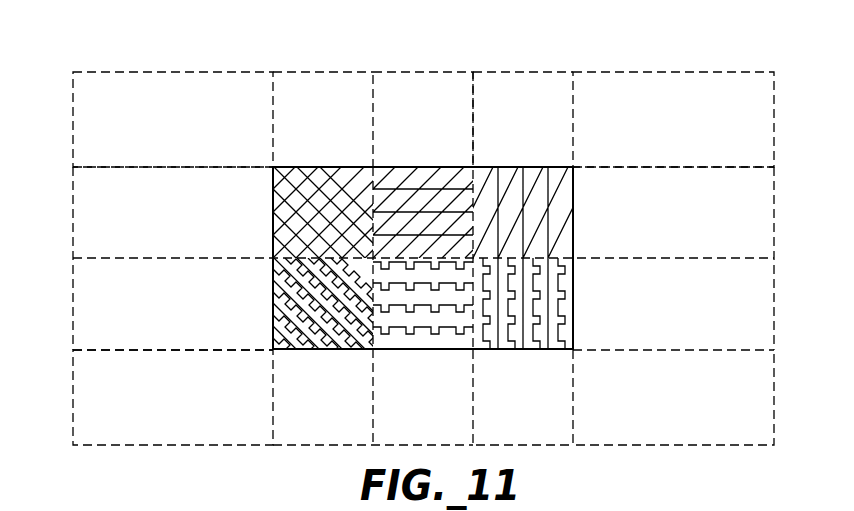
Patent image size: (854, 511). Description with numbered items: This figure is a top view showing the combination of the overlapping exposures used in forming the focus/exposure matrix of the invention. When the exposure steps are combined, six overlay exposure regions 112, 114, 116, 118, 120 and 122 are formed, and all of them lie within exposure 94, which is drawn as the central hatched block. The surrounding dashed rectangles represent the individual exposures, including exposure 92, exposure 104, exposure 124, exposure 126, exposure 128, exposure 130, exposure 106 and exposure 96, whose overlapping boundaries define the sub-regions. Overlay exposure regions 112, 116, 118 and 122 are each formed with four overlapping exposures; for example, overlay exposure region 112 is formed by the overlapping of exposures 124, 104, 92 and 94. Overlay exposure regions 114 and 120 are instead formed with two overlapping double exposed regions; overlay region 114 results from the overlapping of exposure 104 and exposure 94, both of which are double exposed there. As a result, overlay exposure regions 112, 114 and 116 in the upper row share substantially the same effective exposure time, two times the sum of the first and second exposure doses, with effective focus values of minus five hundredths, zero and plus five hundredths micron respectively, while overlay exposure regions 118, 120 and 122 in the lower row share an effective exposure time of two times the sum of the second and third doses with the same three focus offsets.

The exposure 92 is at (196, 167).
The exposure 94 is at (504, 167).
The row boundary 96 is at (650, 350).
The exposure 104 is at (412, 72).
The bottom cell 106 is at (548, 447).
The overlay exposure region 112 is at (273, 213).
The overlay exposure region 114 is at (384, 167).
The overlay exposure region 116 is at (575, 205).
The overlay exposure region 118 is at (273, 294).
The overlay exposure region 120 is at (404, 350).
The overlay exposure region 122 is at (522, 325).
The exposure 124 is at (176, 72).
The top right cell 126 is at (652, 72).
The bottom left cell 128 is at (180, 447).
The bottom right cell 130 is at (624, 447).